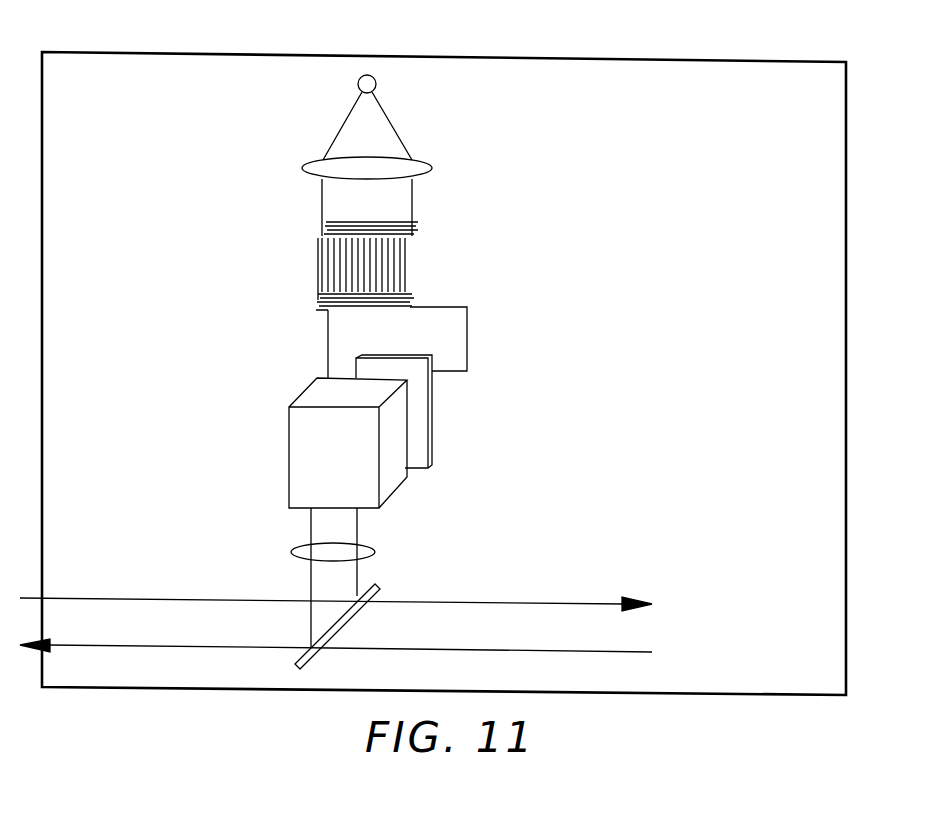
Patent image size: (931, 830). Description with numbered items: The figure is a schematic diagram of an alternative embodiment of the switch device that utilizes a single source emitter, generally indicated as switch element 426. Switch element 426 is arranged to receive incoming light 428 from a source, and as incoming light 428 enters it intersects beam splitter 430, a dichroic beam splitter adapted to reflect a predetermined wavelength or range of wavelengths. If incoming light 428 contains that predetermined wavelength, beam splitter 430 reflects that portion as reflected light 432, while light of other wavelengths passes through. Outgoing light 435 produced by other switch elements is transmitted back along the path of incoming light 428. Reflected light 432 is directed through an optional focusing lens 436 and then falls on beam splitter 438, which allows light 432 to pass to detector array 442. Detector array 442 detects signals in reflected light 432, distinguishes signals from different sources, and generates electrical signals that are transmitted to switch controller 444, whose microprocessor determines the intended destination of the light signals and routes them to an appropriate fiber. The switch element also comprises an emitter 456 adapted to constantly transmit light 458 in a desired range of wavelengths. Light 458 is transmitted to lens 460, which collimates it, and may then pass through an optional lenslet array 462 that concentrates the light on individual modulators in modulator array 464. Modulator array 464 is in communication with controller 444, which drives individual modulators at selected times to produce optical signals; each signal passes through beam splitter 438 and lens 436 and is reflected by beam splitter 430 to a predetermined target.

The switch element 426 is at (598, 30).
The incoming light 428 is at (336, 585).
The beam splitter 430 is at (491, 667).
The reflected light 432 is at (357, 578).
The outgoing light 435 is at (175, 661).
The focusing lens 436 is at (293, 552).
The beam splitter 438 is at (289, 506).
The detector array 442 is at (424, 484).
The switch controller 444 is at (452, 402).
The emitter 456 is at (357, 86).
The light 458 is at (400, 128).
The lens 460 is at (432, 172).
The lenslet array 462 is at (418, 233).
The modulator array 464 is at (418, 297).